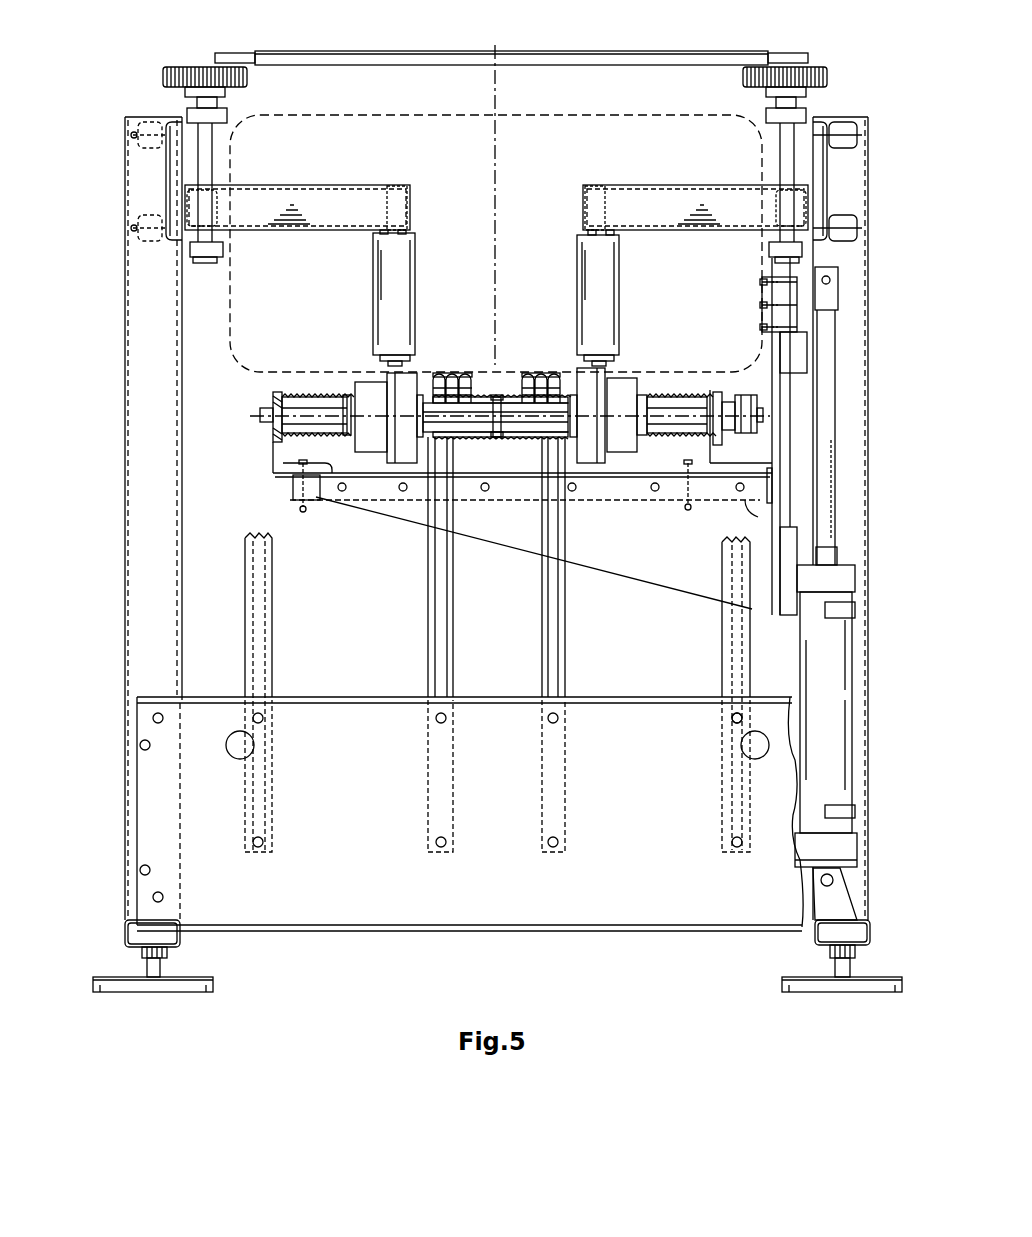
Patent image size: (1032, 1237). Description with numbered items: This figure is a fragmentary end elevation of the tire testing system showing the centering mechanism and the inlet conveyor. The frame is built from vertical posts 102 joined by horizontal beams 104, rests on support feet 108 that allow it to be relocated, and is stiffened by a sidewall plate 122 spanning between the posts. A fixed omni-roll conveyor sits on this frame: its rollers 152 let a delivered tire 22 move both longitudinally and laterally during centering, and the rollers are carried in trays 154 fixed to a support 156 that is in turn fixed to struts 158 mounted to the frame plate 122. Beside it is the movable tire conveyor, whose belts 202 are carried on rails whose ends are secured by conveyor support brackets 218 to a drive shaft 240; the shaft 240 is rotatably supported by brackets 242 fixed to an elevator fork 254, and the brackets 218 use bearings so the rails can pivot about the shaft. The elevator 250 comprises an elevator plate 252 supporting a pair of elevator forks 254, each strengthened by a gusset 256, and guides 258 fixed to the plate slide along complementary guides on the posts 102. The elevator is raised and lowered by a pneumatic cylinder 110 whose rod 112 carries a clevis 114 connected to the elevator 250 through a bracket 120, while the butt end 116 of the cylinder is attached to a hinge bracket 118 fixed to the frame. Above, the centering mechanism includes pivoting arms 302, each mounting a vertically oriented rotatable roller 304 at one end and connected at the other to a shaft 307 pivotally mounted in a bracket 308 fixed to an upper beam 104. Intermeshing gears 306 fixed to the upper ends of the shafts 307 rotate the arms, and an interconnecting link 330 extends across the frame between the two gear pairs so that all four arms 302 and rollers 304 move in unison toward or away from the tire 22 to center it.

The tire 22 is at (600, 154).
The vertical post 102 is at (147, 376).
The horizontal beam 104 is at (143, 933).
The support foot 108 is at (145, 980).
The pneumatic cylinder 110 is at (833, 678).
The rod 112 is at (828, 515).
The clevis 114 is at (824, 300).
The butt end 116 is at (842, 862).
The hinge bracket 118 is at (838, 900).
The bracket 120 is at (800, 290).
The sidewall plate 122 is at (358, 897).
The roller 152 is at (455, 378).
The tray 154 is at (497, 400).
The support 156 is at (478, 437).
The strut 158 is at (440, 618).
The conveyor belt 202 is at (407, 447).
The conveyor support bracket 218 is at (385, 442).
The drive shaft 240 is at (341, 412).
The bracket 242 is at (280, 453).
The conveyor elevator 250 is at (868, 518).
The elevator plate 252 is at (776, 400).
The elevator fork 254 is at (295, 487).
The gusset 256 is at (597, 555).
The guide 258 is at (795, 360).
The pivoting arm 302 is at (305, 205).
The roller 304 is at (395, 270).
The gear 306 is at (192, 75).
The shaft 307 is at (205, 158).
The bracket 308 is at (165, 180).
The interconnecting link 330 is at (372, 58).